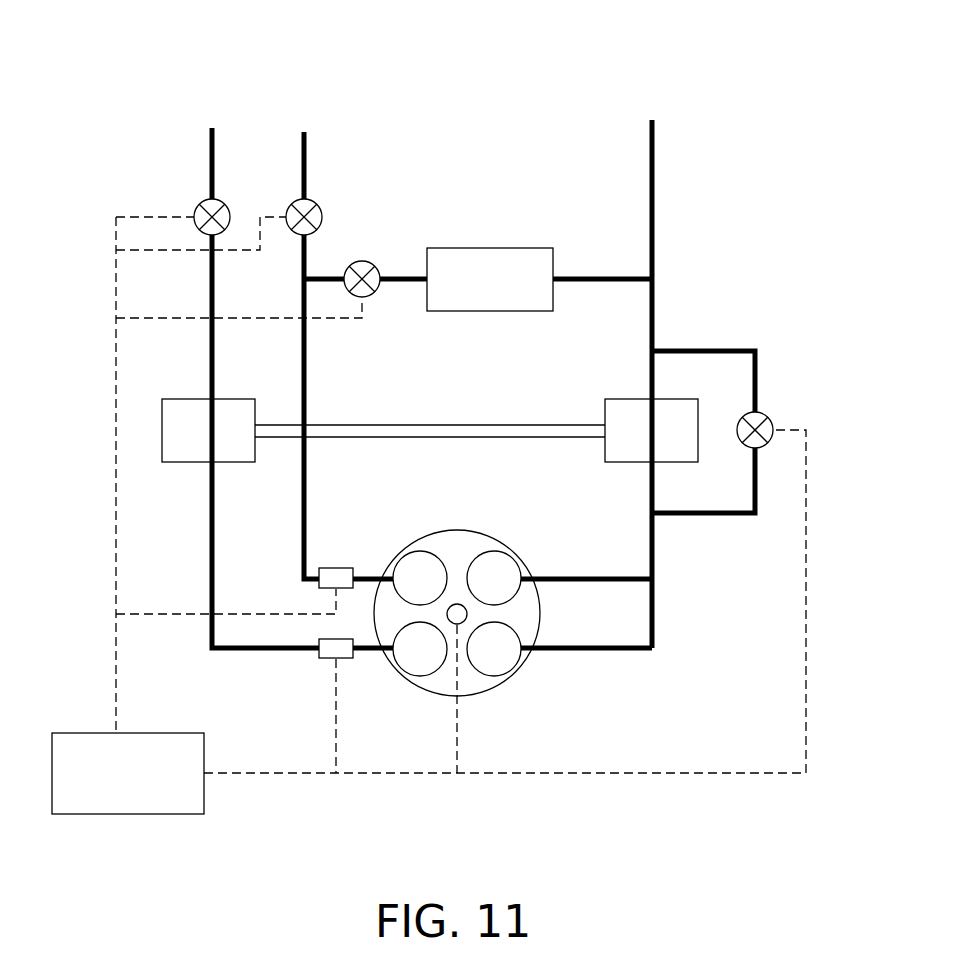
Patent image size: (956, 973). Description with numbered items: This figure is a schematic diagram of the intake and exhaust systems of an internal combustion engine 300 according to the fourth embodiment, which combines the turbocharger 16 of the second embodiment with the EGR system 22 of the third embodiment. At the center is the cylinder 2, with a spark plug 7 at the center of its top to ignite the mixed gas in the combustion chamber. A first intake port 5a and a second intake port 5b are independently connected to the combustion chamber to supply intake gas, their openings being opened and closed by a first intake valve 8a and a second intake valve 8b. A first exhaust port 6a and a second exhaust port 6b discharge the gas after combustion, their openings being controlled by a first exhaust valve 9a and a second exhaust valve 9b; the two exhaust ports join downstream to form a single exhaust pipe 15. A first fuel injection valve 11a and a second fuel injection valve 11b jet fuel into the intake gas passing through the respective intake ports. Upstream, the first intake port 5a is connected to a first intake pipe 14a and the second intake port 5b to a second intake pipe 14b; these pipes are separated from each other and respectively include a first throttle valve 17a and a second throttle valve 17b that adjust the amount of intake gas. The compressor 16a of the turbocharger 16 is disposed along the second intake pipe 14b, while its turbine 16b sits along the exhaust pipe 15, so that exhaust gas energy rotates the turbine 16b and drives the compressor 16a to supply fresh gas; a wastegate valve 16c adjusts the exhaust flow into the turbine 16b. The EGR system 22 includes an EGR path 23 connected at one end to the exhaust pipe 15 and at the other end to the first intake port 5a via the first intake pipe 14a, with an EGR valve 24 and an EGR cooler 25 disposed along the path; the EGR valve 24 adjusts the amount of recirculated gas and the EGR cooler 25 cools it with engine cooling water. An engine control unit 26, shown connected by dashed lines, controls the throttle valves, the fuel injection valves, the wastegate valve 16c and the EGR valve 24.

The internal combustion engine 300 is at (465, 108).
The cylinder 2 is at (480, 696).
The spark plug 7 is at (458, 603).
The first intake valve 8a is at (419, 552).
The second intake valve 8b is at (418, 677).
The first exhaust valve 9a is at (508, 552).
The second exhaust valve 9b is at (500, 684).
The first intake port 5a is at (366, 577).
The second intake port 5b is at (366, 660).
The first exhaust port 6a is at (580, 577).
The second exhaust port 6b is at (604, 651).
The first fuel injection valve 11a is at (335, 567).
The second fuel injection valve 11b is at (322, 661).
The first intake pipe 14a is at (307, 160).
The second intake pipe 14b is at (209, 158).
The exhaust pipe 15 is at (656, 212).
The turbocharger 16 is at (490, 410).
The compressor 16a is at (230, 465).
The turbine 16b is at (630, 400).
The wastegate valve 16c is at (774, 425).
The first throttle valve 17a is at (318, 210).
The second throttle valve 17b is at (200, 206).
The EGR system 22 is at (553, 180).
The EGR path 23 is at (590, 272).
The EGR valve 24 is at (370, 262).
The EGR cooler 25 is at (490, 248).
The engine control unit (ECU) 26 is at (160, 815).